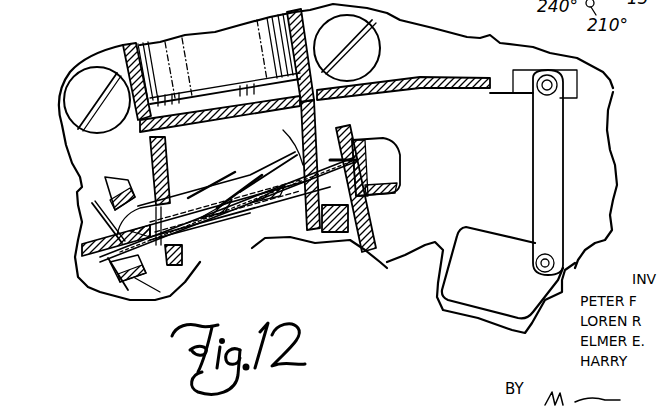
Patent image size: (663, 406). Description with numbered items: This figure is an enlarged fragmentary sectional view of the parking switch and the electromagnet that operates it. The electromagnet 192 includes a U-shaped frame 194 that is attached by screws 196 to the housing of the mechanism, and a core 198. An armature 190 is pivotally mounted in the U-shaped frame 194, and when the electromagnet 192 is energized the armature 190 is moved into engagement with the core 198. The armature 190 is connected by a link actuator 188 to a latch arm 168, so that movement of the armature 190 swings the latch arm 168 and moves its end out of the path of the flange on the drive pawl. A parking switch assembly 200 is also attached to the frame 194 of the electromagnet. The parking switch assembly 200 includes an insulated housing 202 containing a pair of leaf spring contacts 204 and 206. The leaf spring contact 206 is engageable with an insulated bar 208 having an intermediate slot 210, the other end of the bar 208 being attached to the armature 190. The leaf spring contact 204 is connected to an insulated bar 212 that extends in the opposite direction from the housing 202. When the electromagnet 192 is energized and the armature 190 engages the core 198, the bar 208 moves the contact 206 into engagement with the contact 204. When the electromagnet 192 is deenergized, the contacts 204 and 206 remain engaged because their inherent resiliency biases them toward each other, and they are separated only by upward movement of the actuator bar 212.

The latch arm 168 is at (482, 300).
The link actuator 188 is at (557, 178).
The armature 190 is at (578, 91).
The electromagnet 192 is at (177, 44).
The U-shaped frame 194 is at (128, 47).
The screws 196 is at (75, 91).
The core 198 is at (246, 99).
The parking switch assembly 200 is at (175, 252).
The insulated housing 202 is at (398, 185).
The leaf spring contact 204 is at (268, 183).
The leaf spring contact 206 is at (293, 208).
The insulated bar 208 is at (330, 118).
The intermediate slot 210 is at (275, 141).
The insulated bar 212 is at (372, 238).